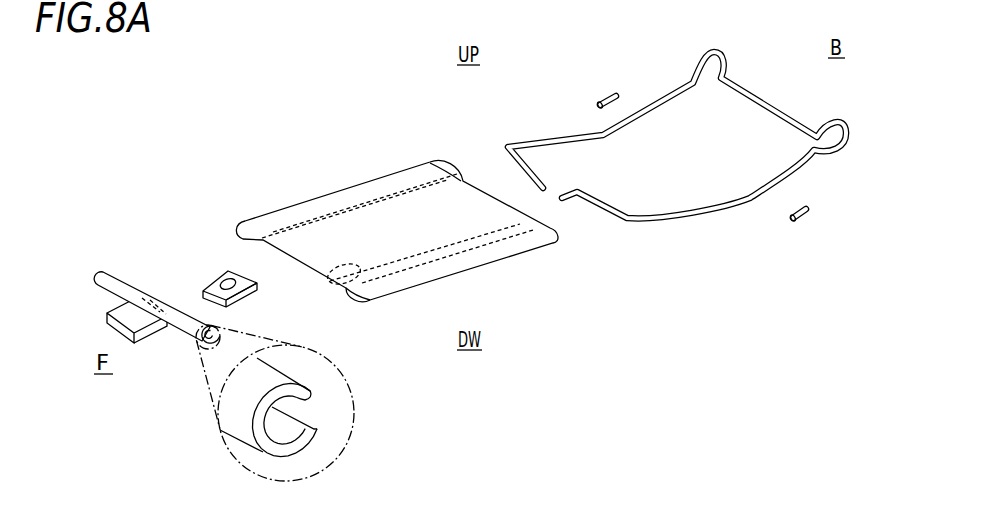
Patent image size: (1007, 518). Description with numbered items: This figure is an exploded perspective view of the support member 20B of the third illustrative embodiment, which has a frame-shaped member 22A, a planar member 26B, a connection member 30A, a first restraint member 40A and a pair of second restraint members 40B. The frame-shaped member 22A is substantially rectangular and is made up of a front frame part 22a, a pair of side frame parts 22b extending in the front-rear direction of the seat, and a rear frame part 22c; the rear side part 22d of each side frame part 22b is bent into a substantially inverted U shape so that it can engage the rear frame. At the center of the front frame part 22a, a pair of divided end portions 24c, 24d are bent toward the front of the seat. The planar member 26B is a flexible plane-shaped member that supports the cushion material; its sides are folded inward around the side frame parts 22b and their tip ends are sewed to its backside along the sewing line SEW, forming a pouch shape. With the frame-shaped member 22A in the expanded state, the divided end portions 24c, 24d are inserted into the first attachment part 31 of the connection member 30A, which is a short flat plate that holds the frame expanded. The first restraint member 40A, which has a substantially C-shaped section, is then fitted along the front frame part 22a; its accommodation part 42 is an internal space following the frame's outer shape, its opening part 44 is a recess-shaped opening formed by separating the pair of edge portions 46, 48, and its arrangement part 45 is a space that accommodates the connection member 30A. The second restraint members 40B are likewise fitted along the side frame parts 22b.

The support member 20B is at (384, 212).
The planar member 26B is at (347, 188).
The sewing line SEW is at (288, 226).
The first restraint member 40A is at (104, 268).
The connection member 30A is at (207, 274).
The first attachment part 31 is at (250, 285).
The arrangement part 45 is at (157, 338).
The accommodation part 42 is at (282, 422).
The opening part 44 is at (305, 410).
The edge portion 46 is at (310, 397).
The edge portion 48 is at (314, 428).
The frame-shaped member 22A is at (664, 148).
The front frame part 22a is at (615, 218).
The side frame part 22b is at (647, 120).
The rear frame part 22c is at (774, 110).
The rear side part 22d is at (692, 64).
The divided end portion 24c is at (540, 182).
The divided end portion 24d is at (570, 198).
The second restraint member 40B is at (612, 90).